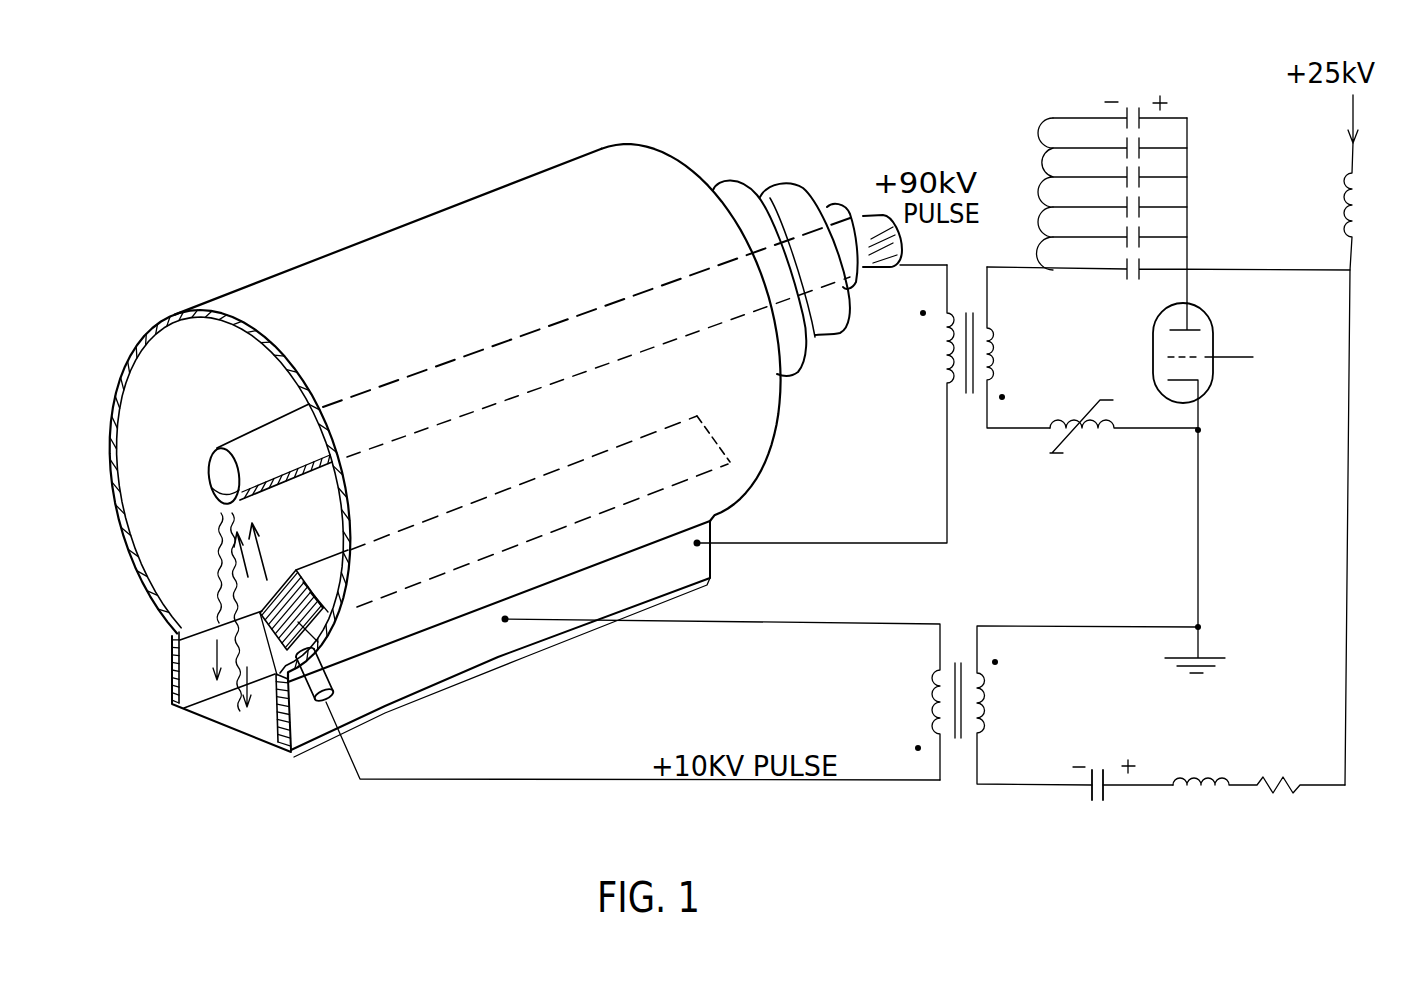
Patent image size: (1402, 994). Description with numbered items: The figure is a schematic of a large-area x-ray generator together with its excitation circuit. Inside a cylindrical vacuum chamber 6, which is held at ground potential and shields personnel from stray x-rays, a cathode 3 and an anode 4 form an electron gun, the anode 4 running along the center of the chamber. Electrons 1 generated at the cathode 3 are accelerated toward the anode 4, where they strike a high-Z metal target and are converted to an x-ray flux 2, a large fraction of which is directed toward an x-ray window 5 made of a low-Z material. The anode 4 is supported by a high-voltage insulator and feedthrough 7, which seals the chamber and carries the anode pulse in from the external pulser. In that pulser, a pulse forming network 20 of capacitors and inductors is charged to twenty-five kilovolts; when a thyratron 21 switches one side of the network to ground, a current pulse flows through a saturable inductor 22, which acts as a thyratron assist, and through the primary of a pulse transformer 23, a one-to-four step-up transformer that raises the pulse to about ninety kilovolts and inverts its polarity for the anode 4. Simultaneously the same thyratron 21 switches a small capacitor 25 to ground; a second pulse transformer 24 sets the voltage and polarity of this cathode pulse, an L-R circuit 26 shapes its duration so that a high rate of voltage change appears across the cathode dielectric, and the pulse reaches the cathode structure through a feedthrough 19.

The electrons 1 is at (260, 548).
The x-ray flux 2 is at (217, 583).
The cathode 3 is at (476, 556).
The anode 4 is at (276, 472).
The x-ray window 5 is at (197, 713).
The cylindrical vacuum chamber 6 is at (290, 272).
The high-voltage insulator and feedthrough 7 is at (820, 337).
The feedthrough 19 is at (330, 693).
The pulse forming network 20 is at (1187, 197).
The thyratron 21 is at (1213, 370).
The saturable inductor 22 is at (1115, 437).
The pulse transformer 23 is at (987, 333).
The second pulse transformer 24 is at (983, 697).
The small capacitor 25 is at (1087, 789).
The L-R circuit 26 is at (1233, 787).